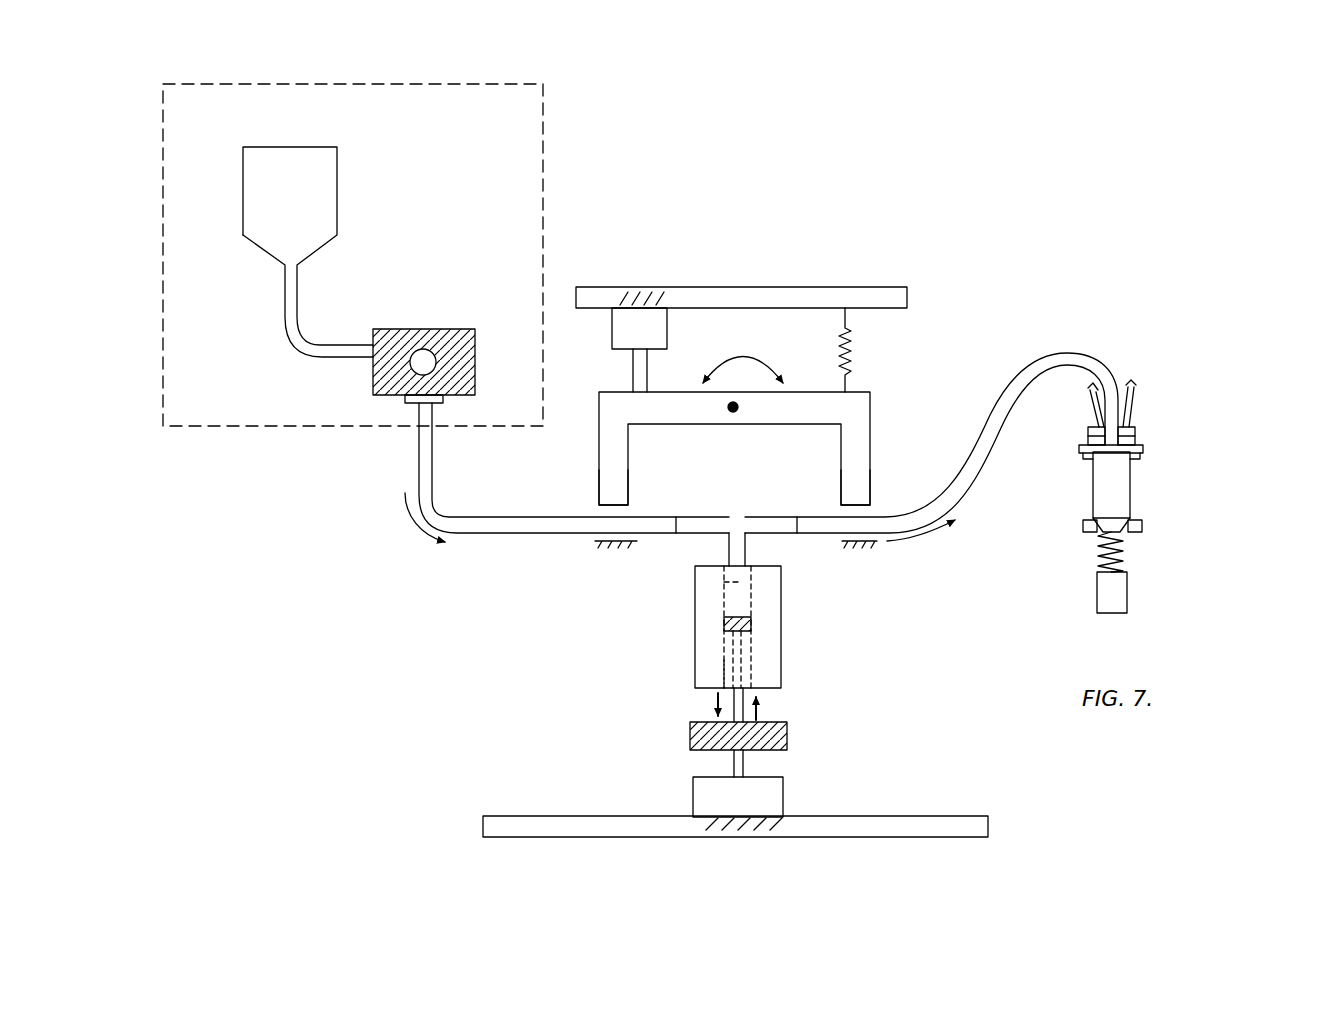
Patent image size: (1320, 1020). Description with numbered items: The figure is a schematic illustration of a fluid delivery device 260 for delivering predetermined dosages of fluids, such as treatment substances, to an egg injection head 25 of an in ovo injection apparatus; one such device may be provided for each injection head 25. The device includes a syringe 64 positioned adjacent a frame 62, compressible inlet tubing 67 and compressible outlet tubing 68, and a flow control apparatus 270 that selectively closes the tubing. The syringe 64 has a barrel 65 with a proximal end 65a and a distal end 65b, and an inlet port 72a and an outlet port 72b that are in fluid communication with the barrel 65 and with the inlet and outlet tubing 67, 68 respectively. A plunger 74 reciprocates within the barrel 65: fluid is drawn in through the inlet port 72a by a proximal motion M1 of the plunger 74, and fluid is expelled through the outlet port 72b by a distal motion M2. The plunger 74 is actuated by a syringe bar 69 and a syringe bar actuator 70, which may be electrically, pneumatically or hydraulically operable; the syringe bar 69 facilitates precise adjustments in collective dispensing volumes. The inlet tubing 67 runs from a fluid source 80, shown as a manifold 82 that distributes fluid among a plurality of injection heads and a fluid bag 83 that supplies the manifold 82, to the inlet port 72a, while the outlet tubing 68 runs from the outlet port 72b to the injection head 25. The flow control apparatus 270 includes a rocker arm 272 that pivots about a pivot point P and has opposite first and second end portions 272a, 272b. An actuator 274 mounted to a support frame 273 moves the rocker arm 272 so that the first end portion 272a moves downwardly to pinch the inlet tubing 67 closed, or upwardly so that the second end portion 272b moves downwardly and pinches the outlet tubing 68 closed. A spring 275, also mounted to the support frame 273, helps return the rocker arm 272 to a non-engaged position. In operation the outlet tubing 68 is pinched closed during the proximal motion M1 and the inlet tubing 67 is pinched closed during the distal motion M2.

The injection head 25 is at (1130, 493).
The frame 62 is at (918, 816).
The syringe 64 is at (781, 618).
The barrel 65 is at (738, 590).
The proximal end 65a is at (724, 668).
The distal end 65b is at (753, 578).
The compressible inlet tubing 67 is at (432, 470).
The compressible outlet tubing 68 is at (978, 473).
The syringe bar 69 is at (787, 735).
The syringe bar actuator 70 is at (775, 796).
The inlet port 72a is at (693, 519).
The outlet port 72b is at (773, 518).
The plunger 74 is at (745, 647).
The fluid source 80 is at (543, 100).
The manifold 82 is at (428, 329).
The fluid bag 83 is at (322, 203).
The fluid delivery device 260 is at (908, 216).
The flow control apparatus 270 is at (723, 283).
The rocker arm 272 is at (870, 418).
The rocker arm first end portion 272a is at (617, 488).
The rocker arm second end portion 272b is at (865, 494).
The support frame 273 is at (773, 287).
The actuator 274 is at (630, 327).
The spring 275 is at (855, 340).
The pivot point P is at (733, 413).
The proximal motion M1 is at (712, 700).
The distal motion M2 is at (760, 713).